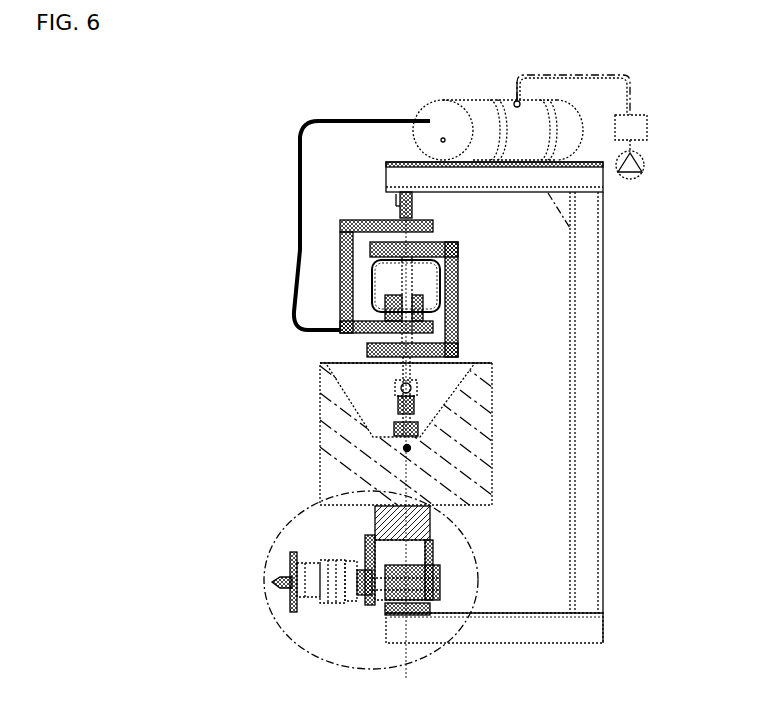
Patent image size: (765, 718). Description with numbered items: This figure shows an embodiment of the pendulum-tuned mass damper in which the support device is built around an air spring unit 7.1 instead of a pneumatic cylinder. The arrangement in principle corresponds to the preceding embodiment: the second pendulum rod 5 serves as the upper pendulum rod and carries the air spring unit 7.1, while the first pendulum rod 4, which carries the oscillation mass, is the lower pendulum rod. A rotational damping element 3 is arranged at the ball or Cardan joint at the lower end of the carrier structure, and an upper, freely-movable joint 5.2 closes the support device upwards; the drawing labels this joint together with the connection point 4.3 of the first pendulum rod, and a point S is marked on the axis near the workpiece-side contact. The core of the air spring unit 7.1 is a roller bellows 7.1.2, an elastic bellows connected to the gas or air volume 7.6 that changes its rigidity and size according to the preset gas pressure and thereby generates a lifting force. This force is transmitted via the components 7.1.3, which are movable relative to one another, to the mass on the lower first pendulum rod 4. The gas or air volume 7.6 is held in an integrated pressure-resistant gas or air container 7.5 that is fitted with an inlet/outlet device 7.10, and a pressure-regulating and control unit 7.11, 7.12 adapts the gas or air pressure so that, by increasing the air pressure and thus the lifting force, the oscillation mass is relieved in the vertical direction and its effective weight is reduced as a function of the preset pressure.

The rotational damping element 3 is at (278, 540).
The first pendulum rod 4 is at (443, 580).
The second pendulum rod 5 is at (395, 425).
The upper freely-movable joint 5.2 is at (337, 397).
The first pendulum rod connection point 4.3 is at (337, 397).
The air spring unit 7.1 is at (470, 258).
The roller bellows 7.1.2 is at (445, 300).
The components movable relative to one another 7.1.3 is at (455, 288).
The gas or air container 7.5 is at (462, 113).
The gas or air volume 7.6 is at (403, 162).
The inlet/outlet device 7.10 is at (338, 331).
The pressure-regulating and control unit 7.11 is at (650, 125).
The pressure-regulating and control unit 7.12 is at (640, 175).
The point S is at (398, 453).